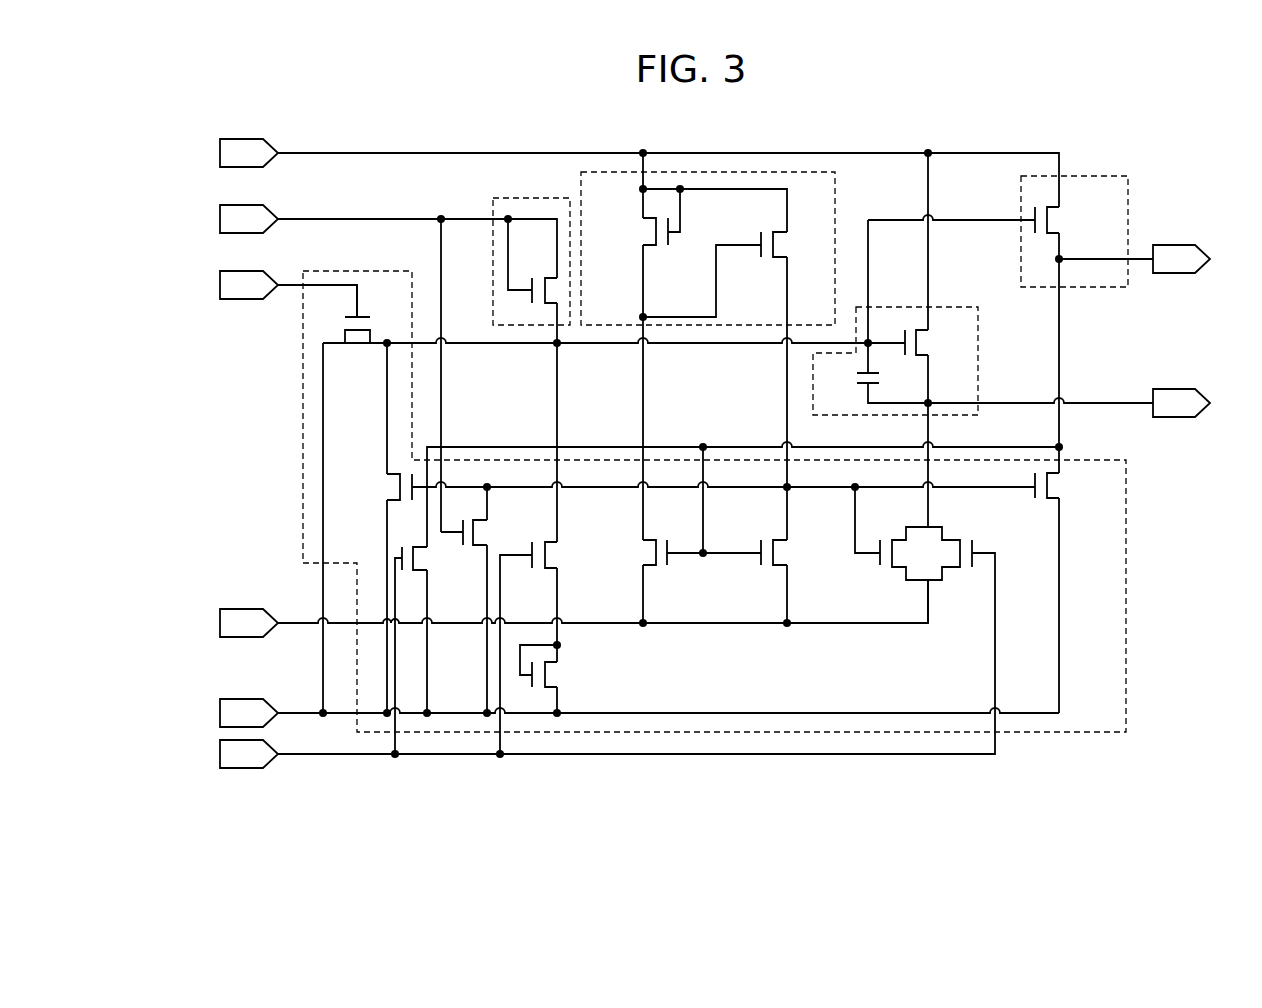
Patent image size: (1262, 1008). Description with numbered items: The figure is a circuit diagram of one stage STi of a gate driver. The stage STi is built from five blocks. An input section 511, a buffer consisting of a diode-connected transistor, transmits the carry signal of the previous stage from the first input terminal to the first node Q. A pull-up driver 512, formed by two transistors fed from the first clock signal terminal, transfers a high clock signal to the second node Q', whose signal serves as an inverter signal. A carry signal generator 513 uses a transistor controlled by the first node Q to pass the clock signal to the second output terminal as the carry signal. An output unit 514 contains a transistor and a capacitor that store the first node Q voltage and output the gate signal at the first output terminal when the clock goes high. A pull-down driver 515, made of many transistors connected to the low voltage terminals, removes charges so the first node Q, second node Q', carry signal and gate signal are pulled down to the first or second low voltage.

The input section 511 is at (527, 198).
The pull-up driver 512 is at (788, 172).
The carry signal generator 513 is at (1113, 176).
The output unit 514 is at (978, 358).
The pull-down driver 515 is at (303, 418).
The stage STi is at (947, 126).